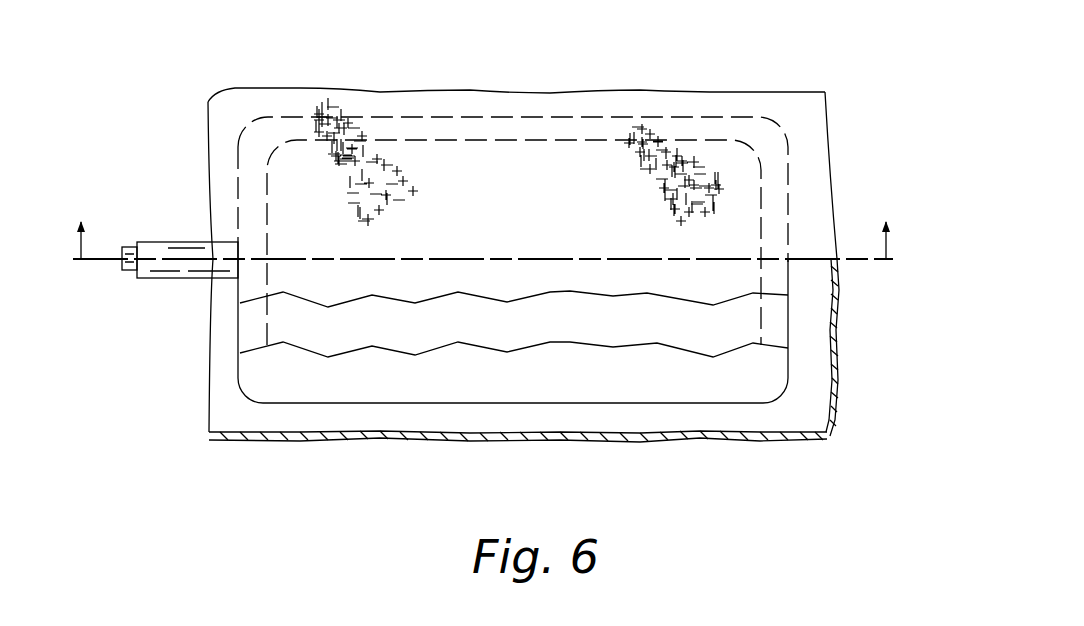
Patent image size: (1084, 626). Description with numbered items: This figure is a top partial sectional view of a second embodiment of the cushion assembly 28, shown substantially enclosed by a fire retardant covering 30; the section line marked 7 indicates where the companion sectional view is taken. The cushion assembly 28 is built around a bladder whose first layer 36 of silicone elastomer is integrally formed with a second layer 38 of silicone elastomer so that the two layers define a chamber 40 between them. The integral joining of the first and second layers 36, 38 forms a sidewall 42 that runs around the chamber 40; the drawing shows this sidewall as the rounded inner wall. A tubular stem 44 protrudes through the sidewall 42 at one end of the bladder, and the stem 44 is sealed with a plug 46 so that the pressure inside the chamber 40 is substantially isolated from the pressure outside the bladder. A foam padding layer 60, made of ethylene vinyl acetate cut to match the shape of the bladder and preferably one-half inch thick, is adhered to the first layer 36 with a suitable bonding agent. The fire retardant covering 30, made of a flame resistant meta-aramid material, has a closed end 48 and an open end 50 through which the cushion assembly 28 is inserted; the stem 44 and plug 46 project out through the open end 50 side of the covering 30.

The section line 7- 7 is at (483, 220).
The cushion assembly 28 is at (675, 283).
The fire retardant covering 30 is at (804, 100).
The first layer 36 is at (422, 287).
The second layer 38 is at (528, 342).
The chamber 40 is at (567, 327).
The sidewall 42 is at (242, 298).
The tubular stem 44 is at (158, 242).
The plug 46 is at (129, 247).
The closed end 48 is at (873, 140).
The open end 50 is at (172, 380).
The foam padding layer 60 is at (378, 395).